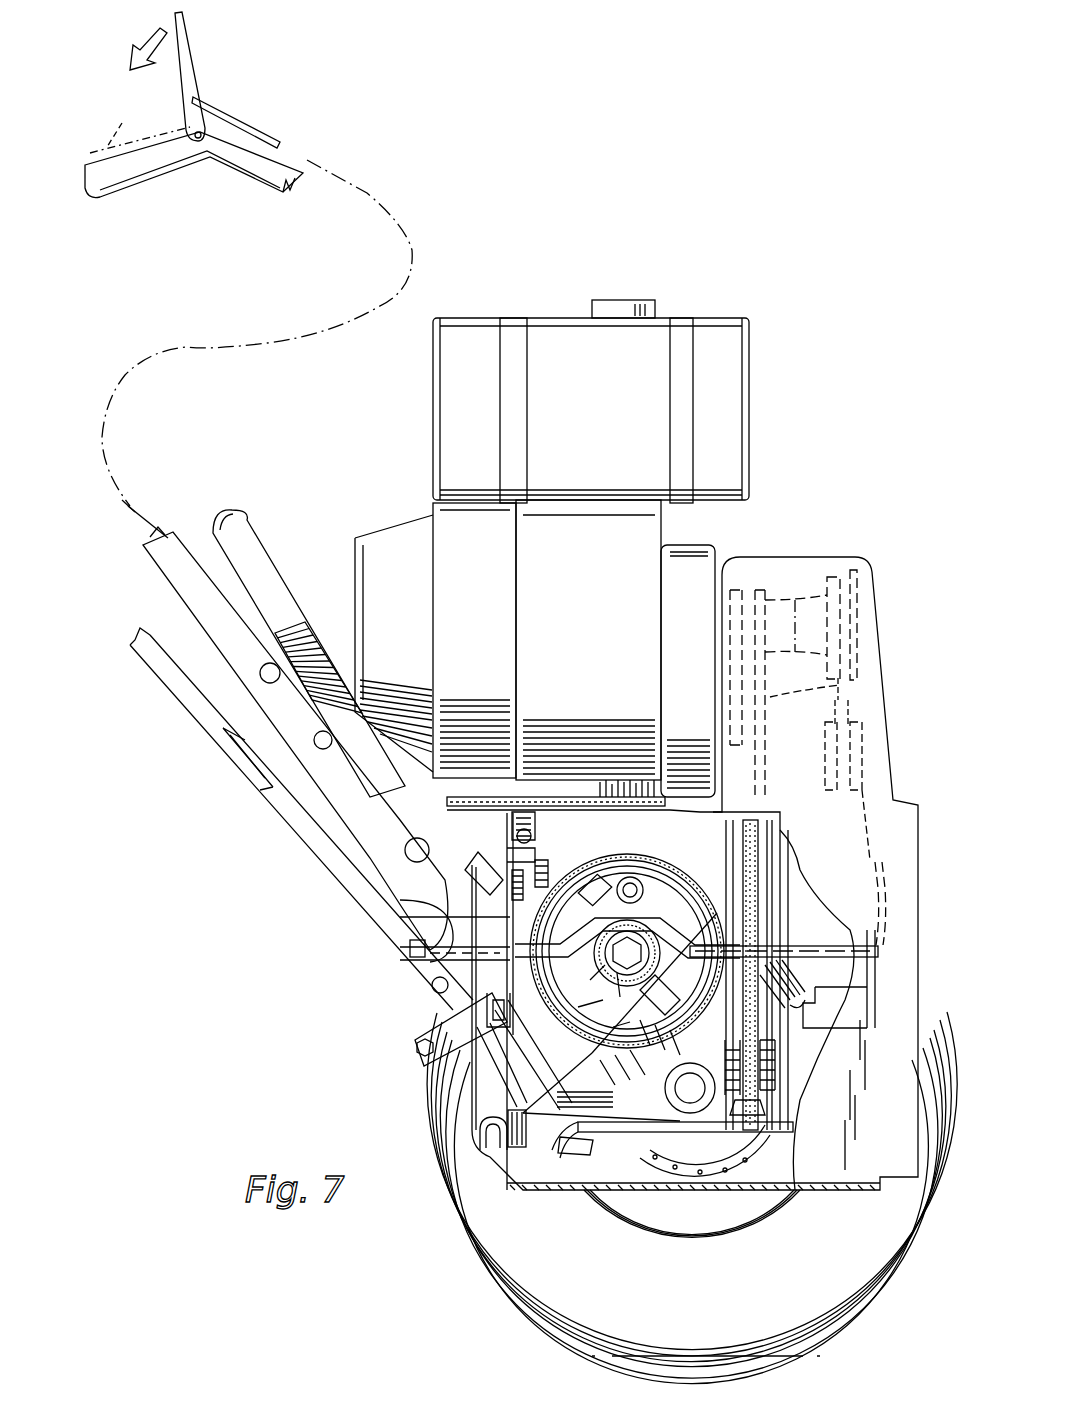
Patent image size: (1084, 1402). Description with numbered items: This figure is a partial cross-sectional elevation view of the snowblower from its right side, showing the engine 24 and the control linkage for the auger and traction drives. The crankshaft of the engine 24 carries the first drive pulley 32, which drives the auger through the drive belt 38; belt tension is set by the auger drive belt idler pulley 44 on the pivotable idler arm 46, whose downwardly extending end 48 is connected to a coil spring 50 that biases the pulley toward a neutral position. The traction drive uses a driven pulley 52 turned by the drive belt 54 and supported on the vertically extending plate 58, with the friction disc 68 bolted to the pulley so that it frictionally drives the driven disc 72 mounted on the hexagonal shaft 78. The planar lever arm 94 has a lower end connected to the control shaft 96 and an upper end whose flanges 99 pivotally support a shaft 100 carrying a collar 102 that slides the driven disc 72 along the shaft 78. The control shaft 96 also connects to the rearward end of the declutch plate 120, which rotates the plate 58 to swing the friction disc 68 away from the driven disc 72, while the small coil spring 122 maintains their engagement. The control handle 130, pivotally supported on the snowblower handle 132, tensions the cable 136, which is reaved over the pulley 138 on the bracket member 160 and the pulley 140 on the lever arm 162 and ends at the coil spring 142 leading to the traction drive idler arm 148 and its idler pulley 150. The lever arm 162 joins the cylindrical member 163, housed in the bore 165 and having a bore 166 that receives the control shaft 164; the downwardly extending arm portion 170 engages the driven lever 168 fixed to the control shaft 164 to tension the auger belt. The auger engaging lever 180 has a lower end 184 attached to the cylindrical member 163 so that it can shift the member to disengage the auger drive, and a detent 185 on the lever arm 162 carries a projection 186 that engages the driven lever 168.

The engine 24 is at (392, 478).
The first drive pulley 32 is at (868, 633).
The drive belt 38 is at (850, 715).
The auger drive belt idler pulley 44 is at (862, 741).
The idler arm 46 is at (878, 863).
The downwardly extending end 48 is at (872, 998).
The coil spring 50 is at (803, 968).
The driven pulley 52 is at (766, 828).
The drive belt 54 is at (765, 1082).
The vertically extending plate 58 is at (778, 1052).
The friction disc 68 is at (770, 860).
The driven disc 72 is at (676, 882).
The shaft 78 is at (627, 951).
The lever arm 94 is at (580, 1050).
The control shaft 96 is at (432, 985).
The flanges 99 is at (628, 948).
The shaft 100 is at (629, 1006).
The collar 102 is at (609, 994).
The declutch plate 120 is at (645, 1118).
The coil spring 122 is at (528, 1150).
The control handle 130 is at (180, 52).
The snowblower handle 132 is at (240, 158).
The cable 136 is at (162, 505).
The pulley 138 is at (492, 838).
The pulley 140 is at (548, 880).
The coil spring 142 is at (522, 830).
The traction drive idler arm 148 is at (712, 745).
The idler pulley 150 is at (848, 688).
The bracket member 160 is at (470, 898).
The lever arm 162 is at (392, 918).
The cylindrical member 163 is at (425, 970).
The control shaft 164 is at (818, 946).
The bore 165 is at (450, 1006).
The bore 166 is at (405, 945).
The driven lever 168 is at (574, 1013).
The arm portion 170 is at (445, 1025).
The auger engaging lever 180 is at (235, 535).
The lower end 184 is at (405, 812).
The detent 185 is at (603, 950).
The projection 186 is at (580, 980).